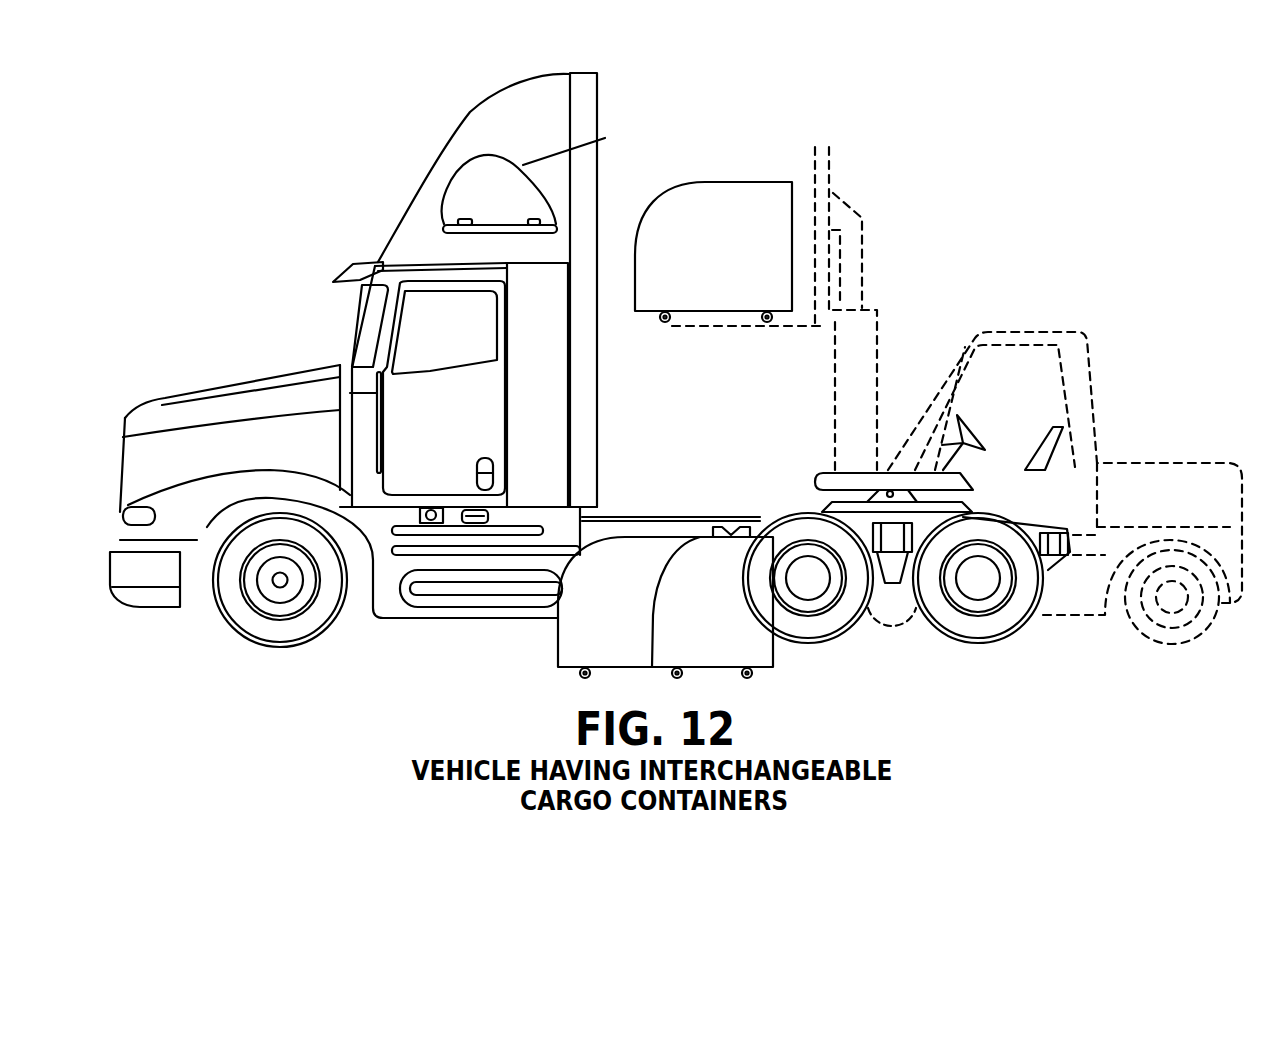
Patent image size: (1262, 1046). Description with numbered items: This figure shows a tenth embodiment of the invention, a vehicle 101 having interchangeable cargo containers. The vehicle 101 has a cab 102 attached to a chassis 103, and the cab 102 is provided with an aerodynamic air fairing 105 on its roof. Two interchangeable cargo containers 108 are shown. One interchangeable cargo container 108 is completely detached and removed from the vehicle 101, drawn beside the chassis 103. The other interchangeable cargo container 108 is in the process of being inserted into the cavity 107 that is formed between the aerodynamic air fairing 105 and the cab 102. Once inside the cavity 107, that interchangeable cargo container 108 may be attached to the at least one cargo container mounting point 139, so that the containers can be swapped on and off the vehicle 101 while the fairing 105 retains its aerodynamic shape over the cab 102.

The vehicle 101 is at (268, 368).
The cab 102 is at (347, 338).
The chassis 103 is at (988, 631).
The aerodynamic air fairing 105 is at (471, 134).
The cavity 107 is at (503, 195).
The interchangeable cargo container 108 is at (700, 196).
The cargo container mounting point 139 is at (452, 221).